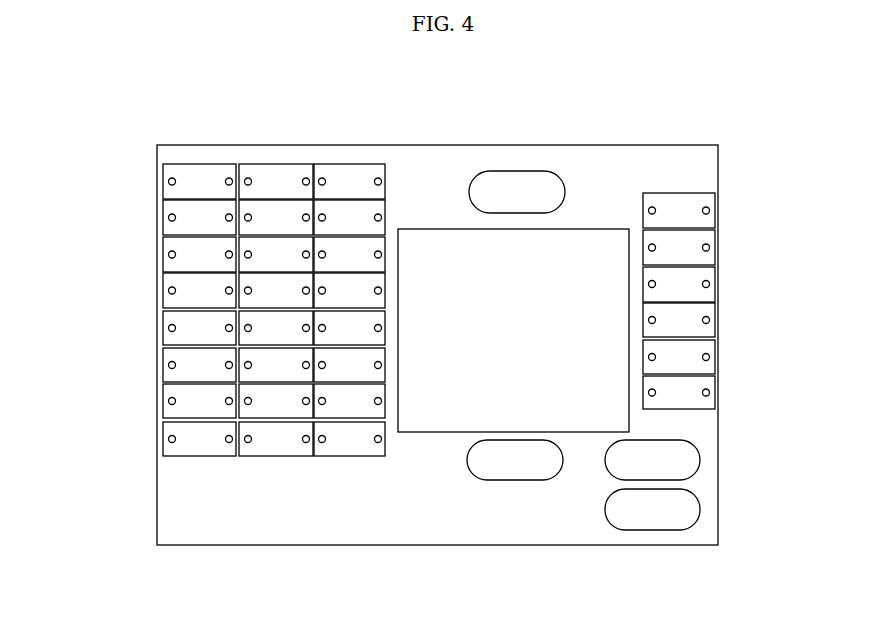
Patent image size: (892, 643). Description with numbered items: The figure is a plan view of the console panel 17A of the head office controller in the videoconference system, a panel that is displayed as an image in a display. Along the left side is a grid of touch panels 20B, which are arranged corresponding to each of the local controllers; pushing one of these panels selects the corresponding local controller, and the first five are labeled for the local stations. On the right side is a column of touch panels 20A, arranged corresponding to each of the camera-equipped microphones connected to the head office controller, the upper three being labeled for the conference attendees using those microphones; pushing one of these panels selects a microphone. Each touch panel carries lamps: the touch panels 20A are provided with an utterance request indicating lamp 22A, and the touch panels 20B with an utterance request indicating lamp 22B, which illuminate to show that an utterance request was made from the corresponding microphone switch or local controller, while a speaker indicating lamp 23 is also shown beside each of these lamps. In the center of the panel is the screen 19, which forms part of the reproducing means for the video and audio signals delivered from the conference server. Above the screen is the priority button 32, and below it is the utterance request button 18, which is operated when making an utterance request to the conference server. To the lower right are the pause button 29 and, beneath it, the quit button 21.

The console panel 17A is at (157, 275).
The touch panels 20B is at (168, 332).
The utterance request indicating lamp 22B is at (168, 400).
The speaker indicating lamp 23 is at (226, 403).
The priority button 32 is at (528, 183).
The screen 19 is at (567, 348).
The touch panels 20A is at (713, 237).
The utterance request indicating lamp 22A is at (655, 282).
The utterance request button 18 is at (508, 464).
The pause button 29 is at (700, 455).
The quit button 21 is at (685, 515).